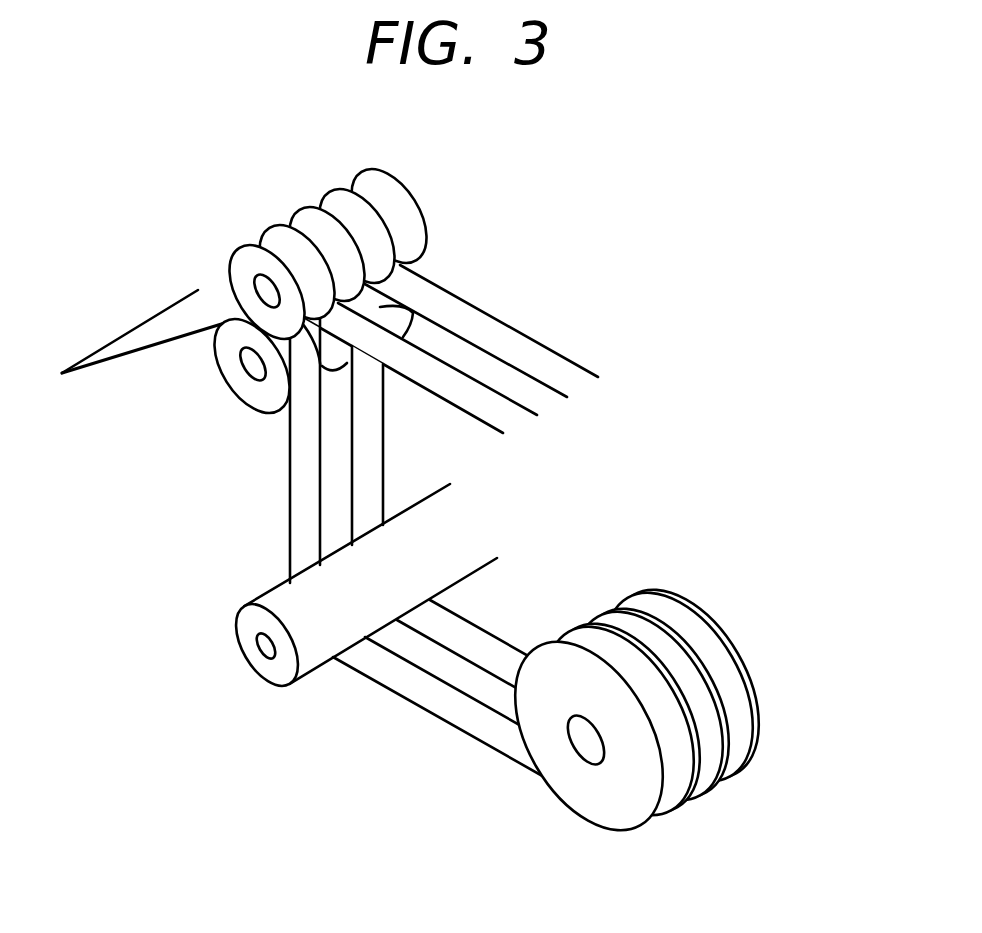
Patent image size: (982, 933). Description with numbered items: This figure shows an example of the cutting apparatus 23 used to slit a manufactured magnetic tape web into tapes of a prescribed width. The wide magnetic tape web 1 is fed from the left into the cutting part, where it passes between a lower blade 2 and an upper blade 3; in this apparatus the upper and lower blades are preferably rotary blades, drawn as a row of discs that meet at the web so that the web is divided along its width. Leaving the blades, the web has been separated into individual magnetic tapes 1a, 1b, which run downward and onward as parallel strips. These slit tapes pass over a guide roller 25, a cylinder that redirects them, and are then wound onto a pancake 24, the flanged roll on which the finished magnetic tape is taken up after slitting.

The magnetic tape web 1 is at (147, 330).
The magnetic tape 1a is at (300, 516).
The magnetic tape 1b is at (437, 382).
The lower blade 2 is at (233, 369).
The upper blade 3 is at (277, 242).
The cutting apparatus 23 is at (512, 294).
The pancake 24 is at (583, 790).
The guide roller 25 is at (317, 653).